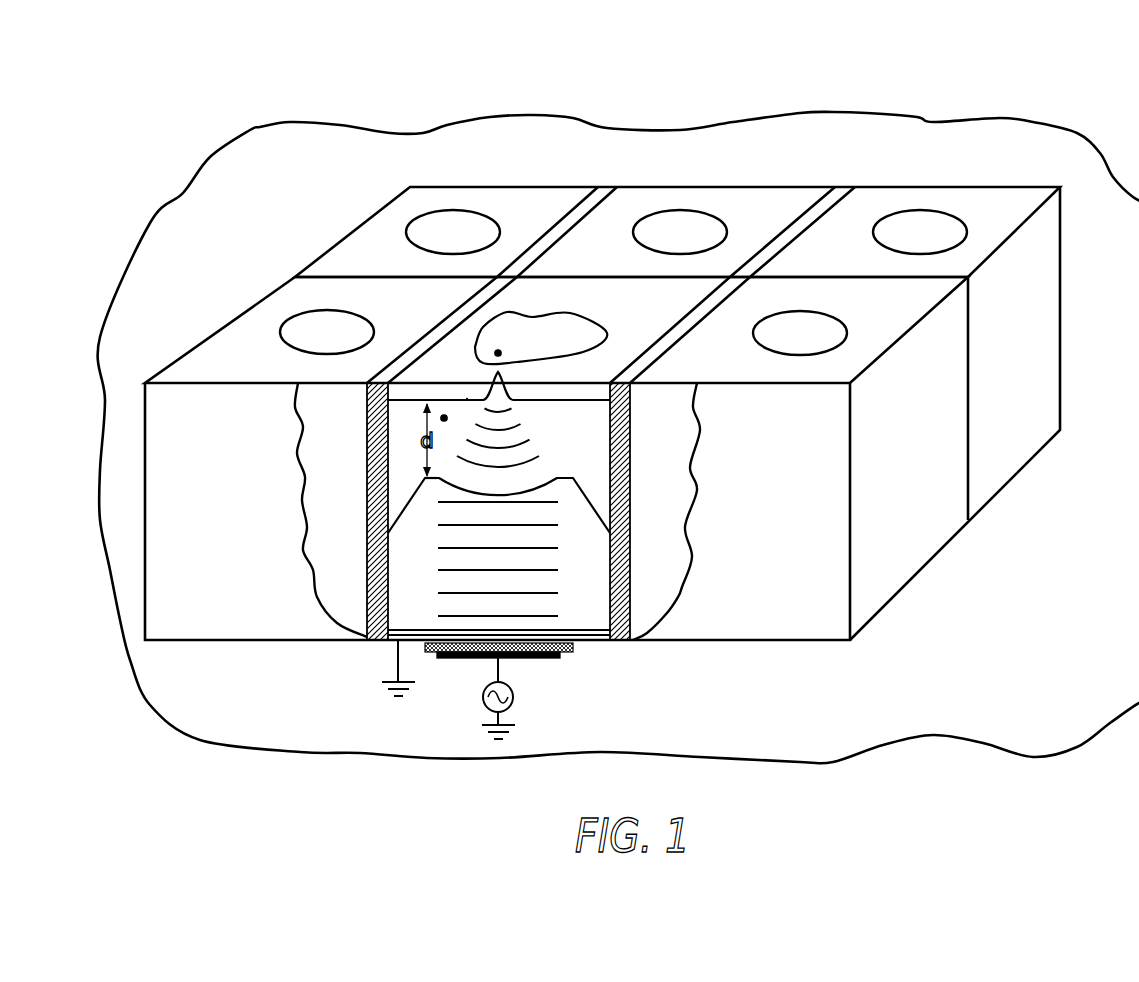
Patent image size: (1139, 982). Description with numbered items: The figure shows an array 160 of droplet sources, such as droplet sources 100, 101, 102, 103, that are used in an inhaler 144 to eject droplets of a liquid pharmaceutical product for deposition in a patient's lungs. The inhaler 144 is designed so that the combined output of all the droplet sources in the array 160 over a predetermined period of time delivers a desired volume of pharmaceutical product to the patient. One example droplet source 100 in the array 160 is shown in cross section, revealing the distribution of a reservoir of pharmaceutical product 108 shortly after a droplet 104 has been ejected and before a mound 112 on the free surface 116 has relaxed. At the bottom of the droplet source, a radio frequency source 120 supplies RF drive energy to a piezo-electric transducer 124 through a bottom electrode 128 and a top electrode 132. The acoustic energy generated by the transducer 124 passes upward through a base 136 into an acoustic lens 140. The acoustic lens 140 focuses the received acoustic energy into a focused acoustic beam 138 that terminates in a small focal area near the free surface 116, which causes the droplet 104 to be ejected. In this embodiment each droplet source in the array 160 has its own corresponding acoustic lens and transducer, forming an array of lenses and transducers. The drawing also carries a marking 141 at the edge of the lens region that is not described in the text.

The droplet source 100 is at (578, 327).
The droplet source 101 is at (803, 333).
The droplet source 102 is at (920, 228).
The droplet source 103 is at (680, 220).
The droplet 104 is at (498, 350).
The reservoir of pharmaceutical product 108 is at (444, 415).
The mound 112 is at (508, 381).
The free surface 116 is at (467, 397).
The radio frequency source 120 is at (511, 704).
The piezo-electric transducer 124 is at (572, 653).
The bottom electrode 128 is at (532, 659).
The top electrode 132 is at (597, 642).
The base 136 is at (413, 633).
The focused acoustic beam 138 is at (519, 441).
The acoustic lens 140 is at (541, 486).
The substrate edge 141 is at (415, 478).
The inhaler 144 is at (317, 120).
The array 160 is at (568, 150).